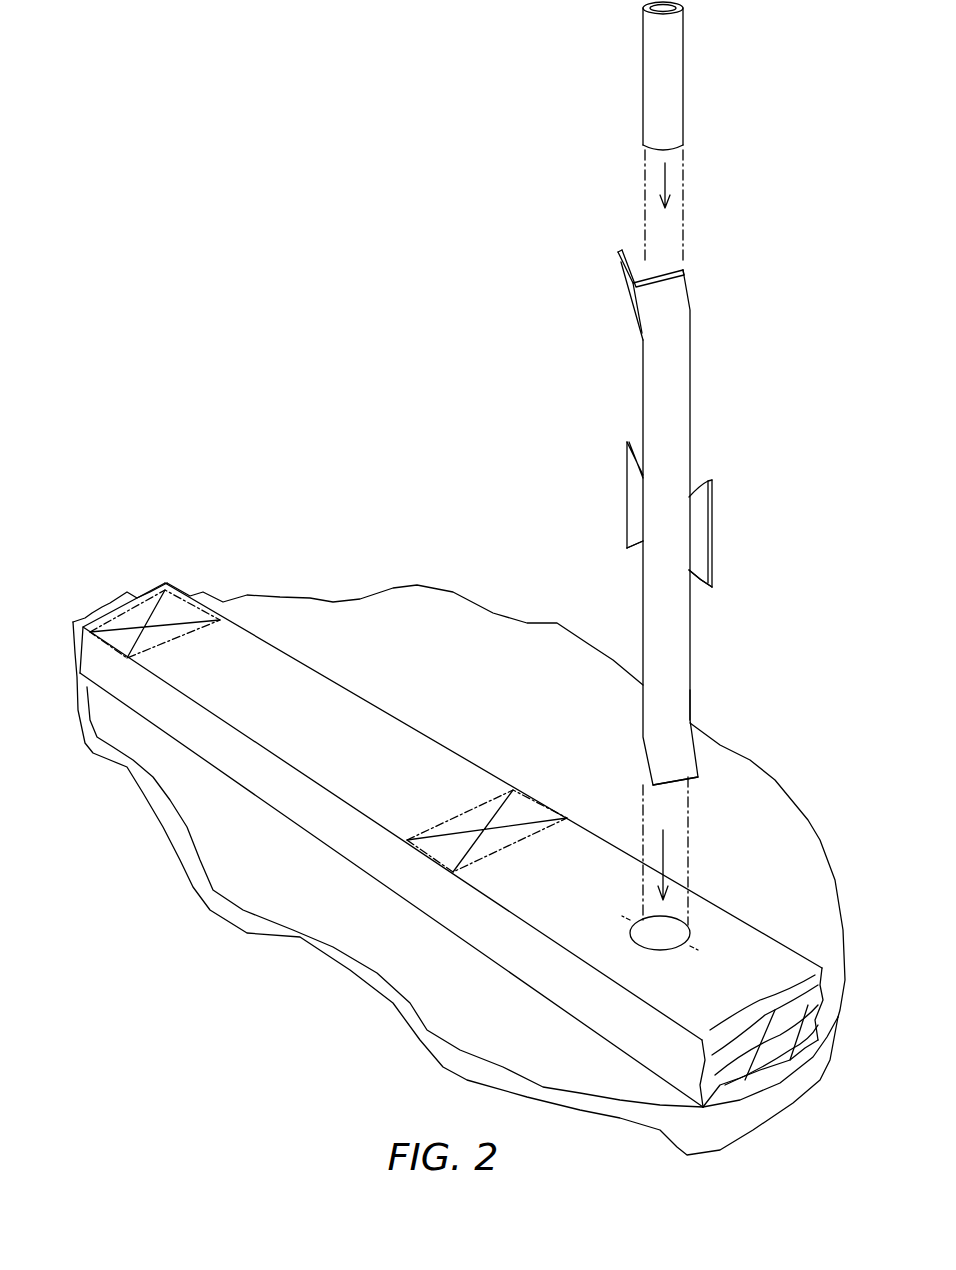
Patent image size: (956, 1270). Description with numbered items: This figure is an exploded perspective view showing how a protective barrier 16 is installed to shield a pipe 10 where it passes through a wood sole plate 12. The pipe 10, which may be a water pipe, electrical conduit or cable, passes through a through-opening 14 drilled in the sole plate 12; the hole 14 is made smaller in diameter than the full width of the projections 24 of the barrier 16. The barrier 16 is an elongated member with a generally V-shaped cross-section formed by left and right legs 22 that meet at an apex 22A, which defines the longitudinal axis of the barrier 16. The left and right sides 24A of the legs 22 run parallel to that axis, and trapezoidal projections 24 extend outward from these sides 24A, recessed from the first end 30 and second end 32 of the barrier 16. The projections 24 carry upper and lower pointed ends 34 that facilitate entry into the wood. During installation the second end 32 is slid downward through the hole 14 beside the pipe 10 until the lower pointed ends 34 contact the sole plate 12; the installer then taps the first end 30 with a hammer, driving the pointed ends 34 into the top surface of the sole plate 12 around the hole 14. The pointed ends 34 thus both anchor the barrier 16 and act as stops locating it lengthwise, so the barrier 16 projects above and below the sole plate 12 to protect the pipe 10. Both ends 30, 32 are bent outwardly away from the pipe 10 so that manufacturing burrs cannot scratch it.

The pipe 10 is at (683, 103).
The sole plate 12 is at (740, 943).
The through-opening 14 is at (660, 925).
The protective barrier 16 is at (710, 440).
The left and right legs 22 is at (678, 647).
The apex 22A is at (643, 382).
The projections 24 is at (627, 483).
The left and right sides 24A is at (690, 700).
The first end 30 is at (625, 257).
The second end 32 is at (698, 780).
The pointed ends 34 is at (627, 553).